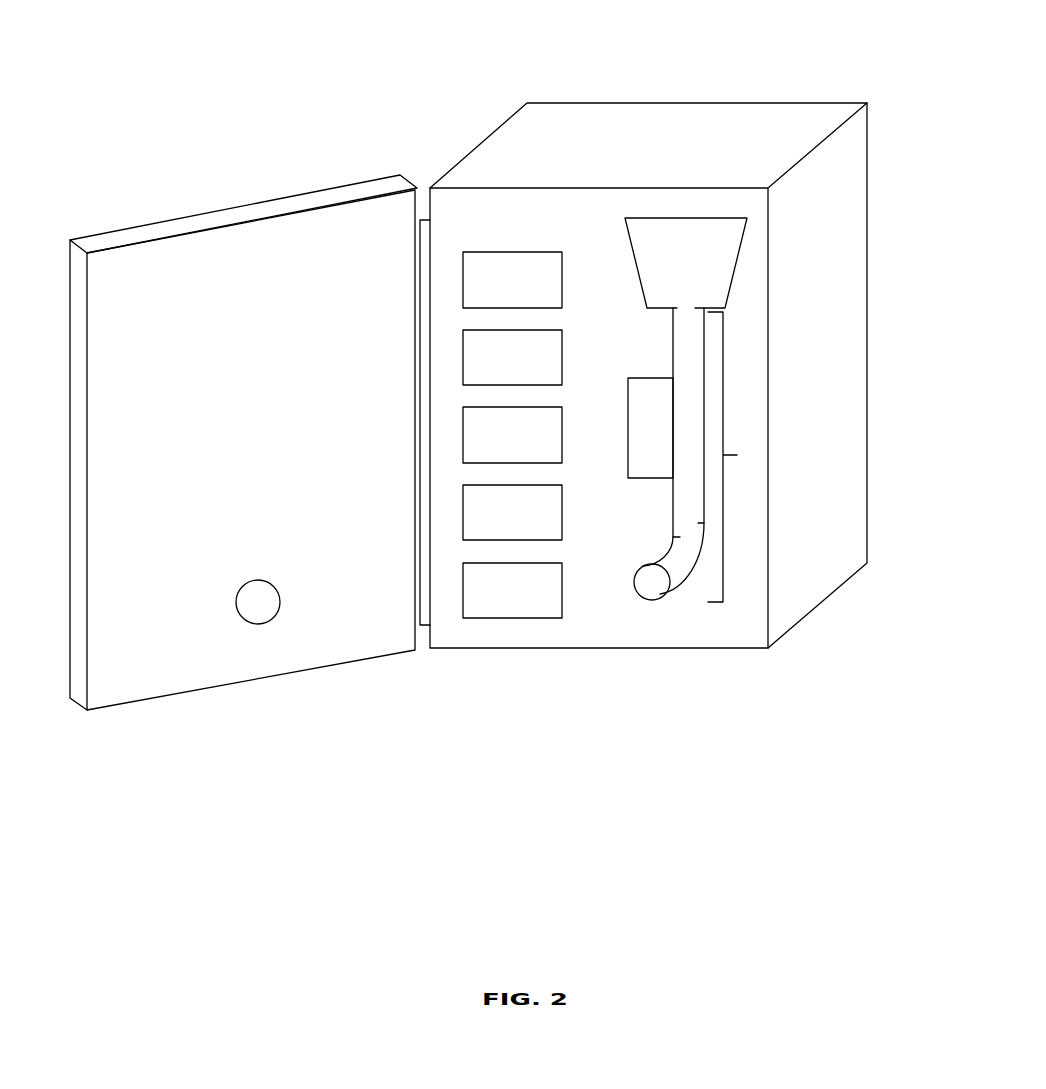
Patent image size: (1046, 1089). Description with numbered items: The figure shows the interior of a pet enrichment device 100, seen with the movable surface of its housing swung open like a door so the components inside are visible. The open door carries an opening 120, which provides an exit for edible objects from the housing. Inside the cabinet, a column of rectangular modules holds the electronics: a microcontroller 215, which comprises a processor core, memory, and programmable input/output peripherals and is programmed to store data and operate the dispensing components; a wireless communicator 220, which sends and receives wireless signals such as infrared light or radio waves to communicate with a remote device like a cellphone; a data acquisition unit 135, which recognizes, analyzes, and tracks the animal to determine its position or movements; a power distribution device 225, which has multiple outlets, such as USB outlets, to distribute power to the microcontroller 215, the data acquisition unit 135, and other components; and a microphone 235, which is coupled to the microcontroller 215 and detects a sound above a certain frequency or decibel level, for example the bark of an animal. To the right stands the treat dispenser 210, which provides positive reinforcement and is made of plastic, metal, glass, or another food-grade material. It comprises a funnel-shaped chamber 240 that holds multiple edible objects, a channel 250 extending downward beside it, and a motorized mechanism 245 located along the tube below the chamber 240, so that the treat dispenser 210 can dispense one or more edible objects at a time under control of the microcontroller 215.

The device 100 is at (127, 147).
The opening 120 is at (255, 577).
The data acquisition unit 135 is at (463, 440).
The treat dispenser 210 is at (738, 265).
The microcontroller 215 is at (512, 252).
The wireless communicator 220 is at (463, 357).
The power distribution device 225 is at (463, 517).
The microphone 235 is at (512, 618).
The chamber 240 is at (688, 256).
The motorized mechanism 245 is at (652, 478).
The channel 250 is at (748, 455).